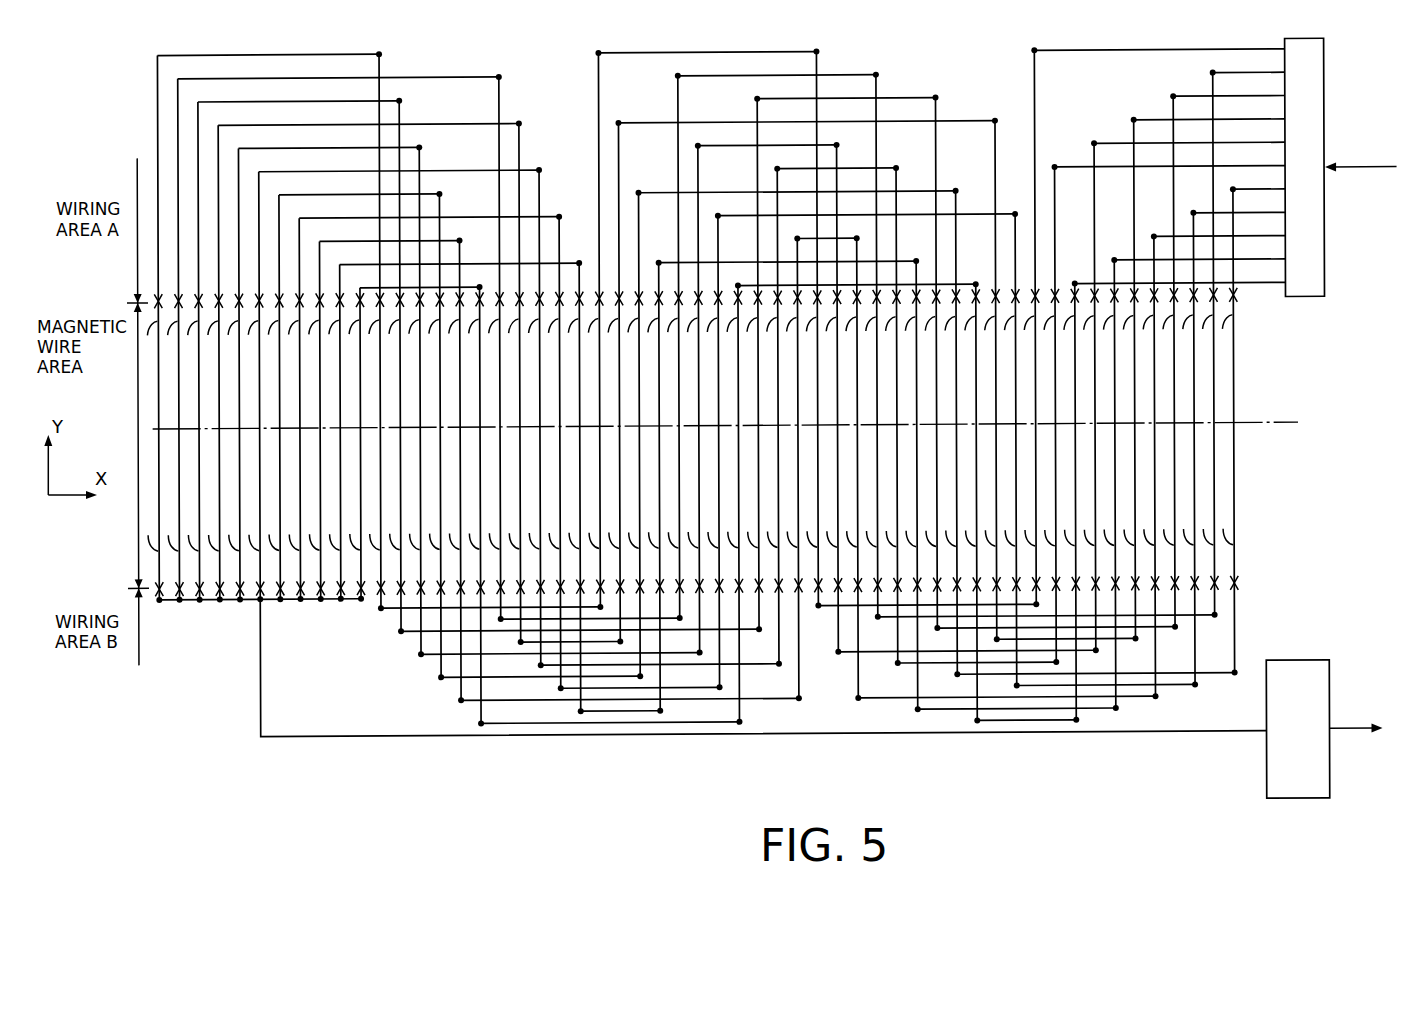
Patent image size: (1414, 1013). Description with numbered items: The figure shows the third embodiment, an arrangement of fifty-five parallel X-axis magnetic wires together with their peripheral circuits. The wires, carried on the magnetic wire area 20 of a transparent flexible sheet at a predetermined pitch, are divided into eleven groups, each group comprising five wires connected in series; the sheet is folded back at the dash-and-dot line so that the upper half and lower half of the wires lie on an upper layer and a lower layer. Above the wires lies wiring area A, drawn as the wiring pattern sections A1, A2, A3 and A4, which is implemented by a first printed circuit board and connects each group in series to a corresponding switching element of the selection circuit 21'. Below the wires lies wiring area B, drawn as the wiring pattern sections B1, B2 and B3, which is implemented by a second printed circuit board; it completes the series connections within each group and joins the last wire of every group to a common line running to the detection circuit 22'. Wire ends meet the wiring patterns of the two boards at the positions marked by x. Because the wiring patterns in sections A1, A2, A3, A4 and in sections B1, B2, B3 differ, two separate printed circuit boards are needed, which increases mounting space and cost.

The magnetic wire area (position detecting board) 20 is at (1233, 461).
The selection circuit 21' is at (1321, 164).
The detection circuit 22' is at (1324, 699).
The wiring area A group 1 A1 is at (369, 158).
The wiring area A group 2 A2 is at (806, 156).
The wiring area A group 3 A3 is at (1074, 37).
The wiring area A group 4 A4 is at (1158, 153).
The wiring area B group 1 B1 is at (230, 599).
The wiring area B group 2 B2 is at (381, 607).
The wiring area B group 3 B3 is at (1030, 680).